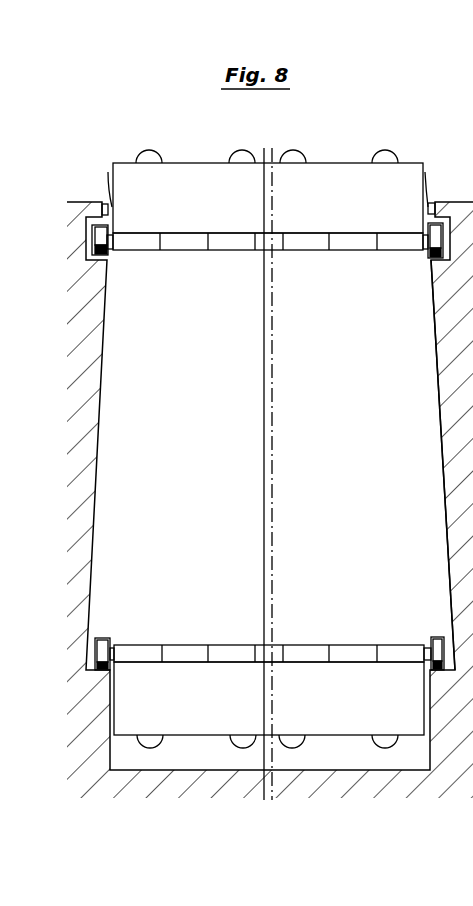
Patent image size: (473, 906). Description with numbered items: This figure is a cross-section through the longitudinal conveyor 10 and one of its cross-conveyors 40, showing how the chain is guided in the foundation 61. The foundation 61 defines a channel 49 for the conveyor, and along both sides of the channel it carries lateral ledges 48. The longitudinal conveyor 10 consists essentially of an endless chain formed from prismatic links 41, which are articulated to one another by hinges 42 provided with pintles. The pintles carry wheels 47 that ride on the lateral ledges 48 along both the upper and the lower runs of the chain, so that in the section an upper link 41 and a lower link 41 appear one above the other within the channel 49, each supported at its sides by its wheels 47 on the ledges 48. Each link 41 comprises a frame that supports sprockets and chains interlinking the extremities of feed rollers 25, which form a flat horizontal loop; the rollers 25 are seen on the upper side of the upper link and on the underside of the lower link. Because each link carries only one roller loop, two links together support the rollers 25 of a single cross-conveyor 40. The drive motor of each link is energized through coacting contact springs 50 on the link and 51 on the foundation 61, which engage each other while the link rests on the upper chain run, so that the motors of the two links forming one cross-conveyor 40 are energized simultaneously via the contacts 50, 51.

The longitudinal conveyor 10 is at (366, 128).
The feed rollers 25 is at (240, 158).
The cross-conveyor 40 is at (303, 715).
The prismatic link 41 is at (348, 186).
The hinge 42 is at (292, 244).
The wheel 47 is at (100, 250).
The lateral ledge 48 is at (432, 262).
The channel 49 is at (440, 582).
The contact spring 50 is at (110, 208).
The contact spring 51 is at (103, 207).
The foundation 61 is at (446, 446).